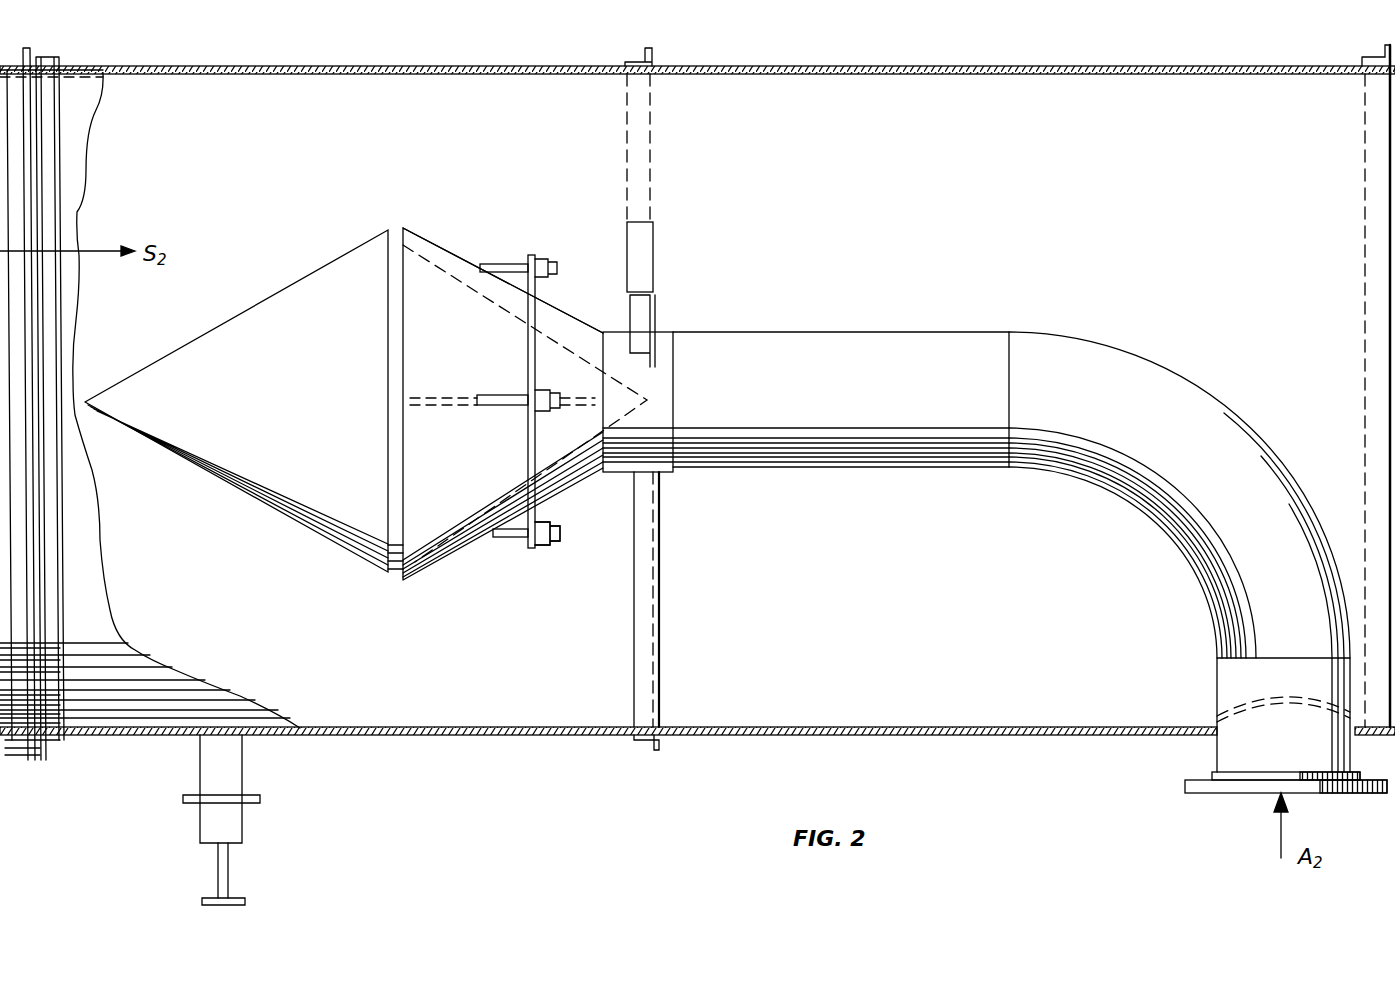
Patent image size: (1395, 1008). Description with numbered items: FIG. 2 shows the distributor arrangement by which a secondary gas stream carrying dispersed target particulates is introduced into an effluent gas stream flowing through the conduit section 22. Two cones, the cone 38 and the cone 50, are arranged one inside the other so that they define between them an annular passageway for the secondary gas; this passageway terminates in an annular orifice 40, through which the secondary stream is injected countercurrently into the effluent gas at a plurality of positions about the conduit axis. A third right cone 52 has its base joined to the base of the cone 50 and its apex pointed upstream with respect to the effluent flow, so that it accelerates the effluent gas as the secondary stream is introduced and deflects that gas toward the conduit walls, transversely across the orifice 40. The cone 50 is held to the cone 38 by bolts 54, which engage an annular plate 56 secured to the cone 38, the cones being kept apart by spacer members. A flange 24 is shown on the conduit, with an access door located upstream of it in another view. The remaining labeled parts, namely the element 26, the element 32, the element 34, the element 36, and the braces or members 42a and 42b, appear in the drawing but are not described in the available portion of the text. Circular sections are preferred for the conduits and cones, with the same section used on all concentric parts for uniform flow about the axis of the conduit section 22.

The conduit section 22 is at (907, 75).
The flange 24 is at (63, 742).
The side wall of housing 26 is at (1388, 120).
The inlet flange 32 is at (1190, 793).
The elbow duct 34 is at (1174, 374).
The support leg 36 is at (237, 836).
The cone 38 is at (452, 254).
The annular orifice 40 is at (396, 389).
The lower brace 42a is at (659, 645).
The upper brace 42b is at (648, 270).
The cone 50 is at (455, 562).
The third right cone 52 is at (278, 511).
The bolts 54 is at (502, 266).
The annular plate 56 is at (543, 510).